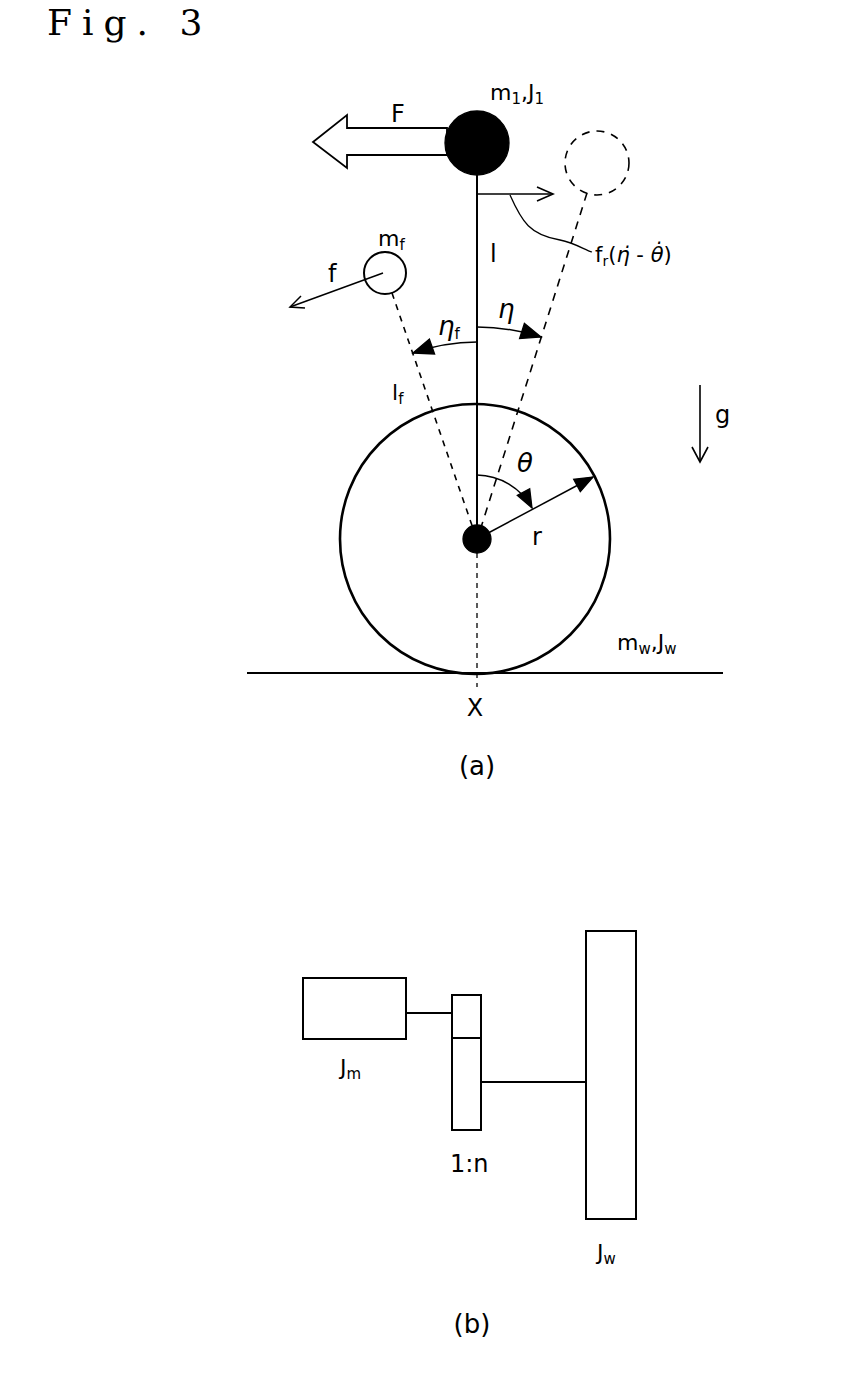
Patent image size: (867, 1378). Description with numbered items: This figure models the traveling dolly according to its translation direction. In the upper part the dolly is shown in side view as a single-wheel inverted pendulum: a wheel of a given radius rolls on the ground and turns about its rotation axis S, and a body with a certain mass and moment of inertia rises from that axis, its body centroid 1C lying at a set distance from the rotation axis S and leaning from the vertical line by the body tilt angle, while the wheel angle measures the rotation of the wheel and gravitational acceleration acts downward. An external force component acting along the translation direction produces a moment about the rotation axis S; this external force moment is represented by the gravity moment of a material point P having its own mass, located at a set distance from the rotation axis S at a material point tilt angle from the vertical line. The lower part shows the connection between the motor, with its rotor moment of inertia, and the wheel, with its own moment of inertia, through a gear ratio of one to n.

The body centroid 1C is at (465, 110).
The material point P is at (372, 256).
The rotation axis of the wheel S is at (461, 538).